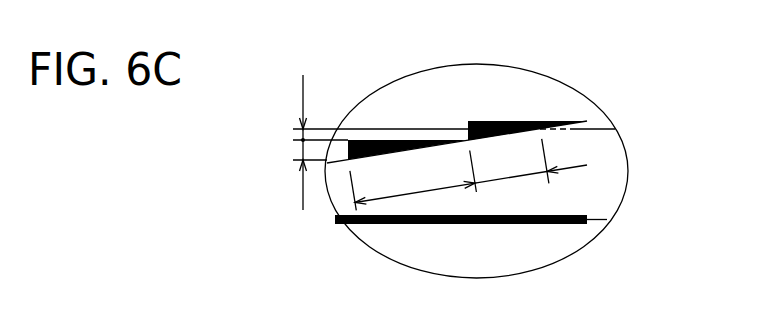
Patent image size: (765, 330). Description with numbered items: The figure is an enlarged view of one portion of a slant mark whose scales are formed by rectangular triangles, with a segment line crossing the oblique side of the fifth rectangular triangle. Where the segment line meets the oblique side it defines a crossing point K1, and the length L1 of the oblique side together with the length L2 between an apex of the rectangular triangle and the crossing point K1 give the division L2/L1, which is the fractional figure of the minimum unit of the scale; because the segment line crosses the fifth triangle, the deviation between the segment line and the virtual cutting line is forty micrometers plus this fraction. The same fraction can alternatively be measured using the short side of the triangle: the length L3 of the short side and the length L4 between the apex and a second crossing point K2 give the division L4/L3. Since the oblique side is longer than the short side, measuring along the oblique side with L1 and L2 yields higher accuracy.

The crossing point K1 is at (541, 130).
The crossing point K2 is at (467, 123).
The length of the oblique side L1 is at (413, 181).
The length between apex and crossing point L2 is at (531, 161).
The length of the short side L3 is at (287, 175).
The length between apex and crossing point L4 is at (287, 108).